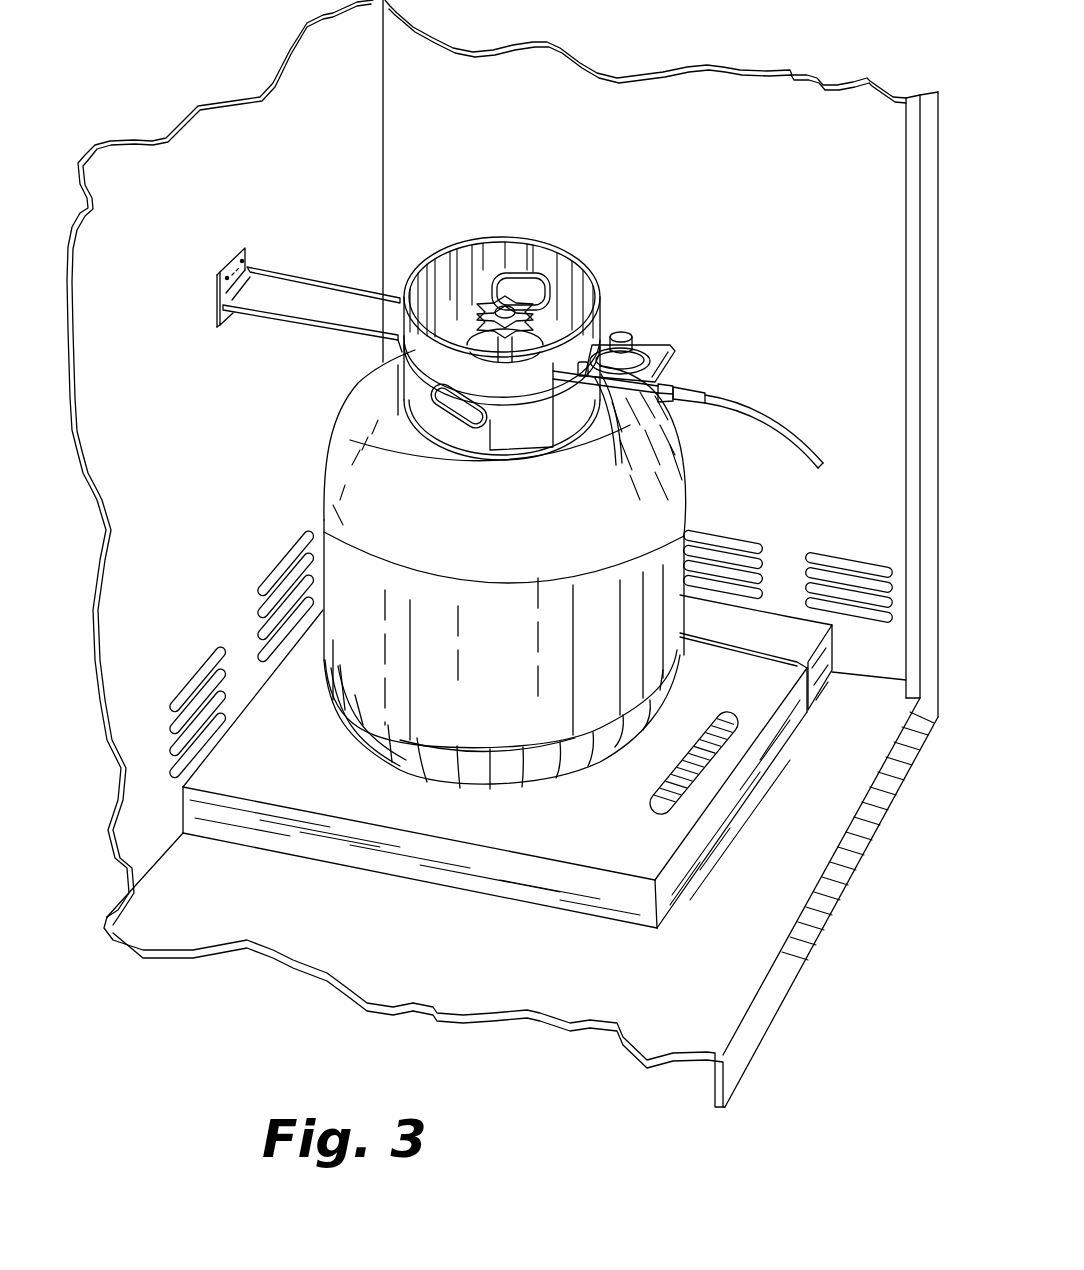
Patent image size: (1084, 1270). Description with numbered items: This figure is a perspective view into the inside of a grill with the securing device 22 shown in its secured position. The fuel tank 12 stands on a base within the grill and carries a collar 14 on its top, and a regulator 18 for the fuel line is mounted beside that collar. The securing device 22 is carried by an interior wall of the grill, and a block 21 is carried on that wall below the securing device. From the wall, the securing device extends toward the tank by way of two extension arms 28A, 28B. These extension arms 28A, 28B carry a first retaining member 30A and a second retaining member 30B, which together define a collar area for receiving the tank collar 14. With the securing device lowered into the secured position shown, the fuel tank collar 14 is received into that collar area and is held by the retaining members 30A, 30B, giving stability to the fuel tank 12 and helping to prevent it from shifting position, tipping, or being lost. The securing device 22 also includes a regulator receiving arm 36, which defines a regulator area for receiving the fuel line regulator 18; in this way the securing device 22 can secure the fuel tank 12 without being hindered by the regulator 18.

The fuel tank 12 is at (506, 658).
The collar 14 is at (514, 238).
The regulator 18 is at (622, 334).
The block 21 is at (232, 320).
The securing device 22 is at (290, 286).
The extension arm 28A is at (266, 338).
The extension arm 28B is at (346, 290).
The first retaining member 30A is at (618, 436).
The second retaining member 30B is at (604, 328).
The regulator receiving arm 36 is at (674, 348).